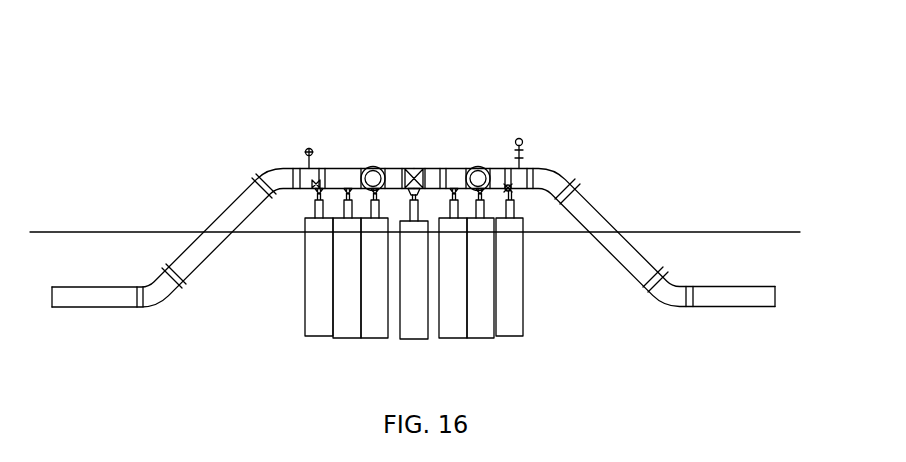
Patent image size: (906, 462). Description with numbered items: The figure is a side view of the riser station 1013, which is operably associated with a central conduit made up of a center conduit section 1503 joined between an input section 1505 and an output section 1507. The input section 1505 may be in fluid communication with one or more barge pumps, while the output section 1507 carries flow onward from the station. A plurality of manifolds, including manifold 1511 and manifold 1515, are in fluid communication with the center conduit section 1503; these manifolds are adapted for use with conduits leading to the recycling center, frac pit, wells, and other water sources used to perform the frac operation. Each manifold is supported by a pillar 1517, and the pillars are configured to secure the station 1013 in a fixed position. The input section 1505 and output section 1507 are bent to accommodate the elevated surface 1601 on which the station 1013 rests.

The riser station 1013 is at (133, 55).
The center conduit section 1503 is at (433, 168).
The input section 1505 is at (225, 214).
The output section 1507 is at (583, 190).
The manifold 1511 is at (367, 167).
The manifold 1515 is at (480, 167).
The pillar 1517 is at (305, 307).
The elevated surface 1601 is at (688, 232).